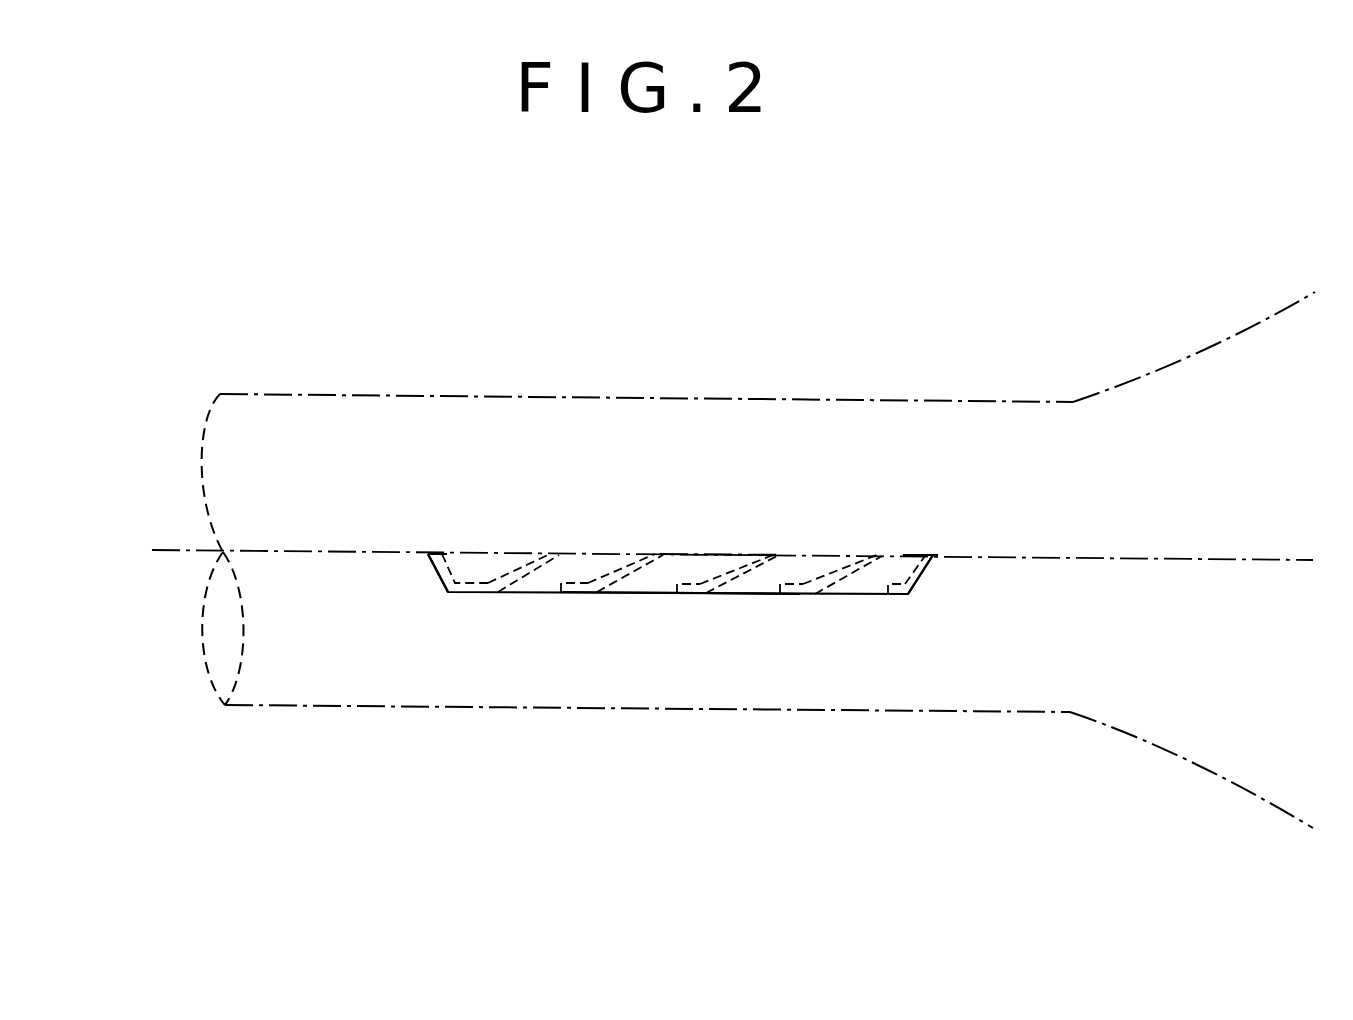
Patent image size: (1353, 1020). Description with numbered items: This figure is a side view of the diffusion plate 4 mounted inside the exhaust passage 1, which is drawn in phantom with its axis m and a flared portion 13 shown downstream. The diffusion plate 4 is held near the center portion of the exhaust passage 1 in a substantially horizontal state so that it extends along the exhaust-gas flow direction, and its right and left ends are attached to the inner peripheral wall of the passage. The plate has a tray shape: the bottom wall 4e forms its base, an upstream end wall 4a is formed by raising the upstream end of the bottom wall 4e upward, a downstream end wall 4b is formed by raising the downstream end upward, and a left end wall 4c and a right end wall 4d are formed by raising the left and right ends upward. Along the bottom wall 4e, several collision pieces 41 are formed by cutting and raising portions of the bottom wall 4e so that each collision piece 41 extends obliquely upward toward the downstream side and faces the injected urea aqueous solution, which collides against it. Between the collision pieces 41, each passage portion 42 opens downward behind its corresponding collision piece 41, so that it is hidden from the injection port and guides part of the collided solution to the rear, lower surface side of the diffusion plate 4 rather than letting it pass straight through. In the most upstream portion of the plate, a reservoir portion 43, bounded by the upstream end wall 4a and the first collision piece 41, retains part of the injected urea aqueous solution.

The exhaust passage 1 is at (945, 400).
The flared portion 13 is at (1197, 356).
The axis m is at (165, 548).
The diffusion plate 4 is at (498, 593).
The upstream end wall 4a is at (440, 577).
The downstream end wall 4b is at (920, 578).
The left end wall 4c is at (655, 580).
The right end wall 4d is at (705, 575).
The bottom wall 4e is at (694, 595).
The collision piece 41 is at (613, 560).
The passage portion 42 is at (619, 594).
The reservoir portion 43 is at (481, 578).